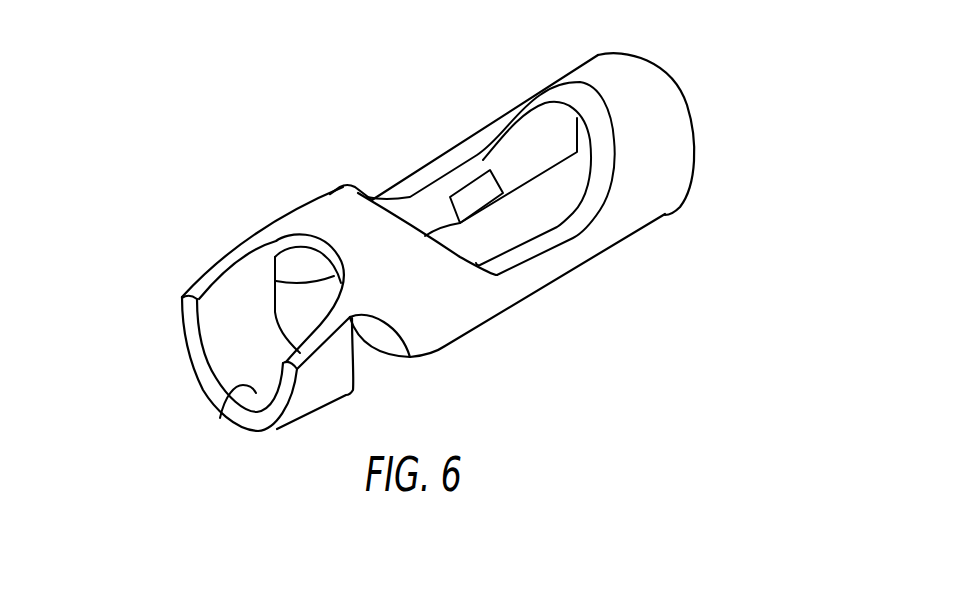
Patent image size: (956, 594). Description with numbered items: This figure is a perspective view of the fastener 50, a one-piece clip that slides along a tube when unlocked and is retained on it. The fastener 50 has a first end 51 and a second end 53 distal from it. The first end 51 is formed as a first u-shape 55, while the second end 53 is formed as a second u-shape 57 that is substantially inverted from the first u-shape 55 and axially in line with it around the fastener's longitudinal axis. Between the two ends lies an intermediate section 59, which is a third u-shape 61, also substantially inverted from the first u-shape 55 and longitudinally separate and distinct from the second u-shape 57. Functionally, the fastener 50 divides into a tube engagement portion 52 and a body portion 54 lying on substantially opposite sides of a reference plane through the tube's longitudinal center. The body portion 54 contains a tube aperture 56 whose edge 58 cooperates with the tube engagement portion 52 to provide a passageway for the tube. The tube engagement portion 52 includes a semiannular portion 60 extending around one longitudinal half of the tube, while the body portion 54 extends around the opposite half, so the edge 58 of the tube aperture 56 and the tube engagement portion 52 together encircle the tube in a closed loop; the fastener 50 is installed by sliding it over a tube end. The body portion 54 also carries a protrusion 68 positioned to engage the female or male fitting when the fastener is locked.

The fastener 50 is at (194, 157).
The first end 51 is at (203, 368).
The tube engagement portion 52 is at (321, 405).
The second end 53 is at (693, 158).
The body portion 54 is at (570, 252).
The first u-shape 55 is at (242, 423).
The tube aperture 56 is at (314, 300).
The second u-shape 57 is at (660, 75).
The edge 58 is at (290, 238).
The intermediate section 59 is at (404, 216).
The semiannular portion 60 is at (219, 420).
The third u-shape 61 is at (367, 197).
The protrusion 68 is at (477, 193).